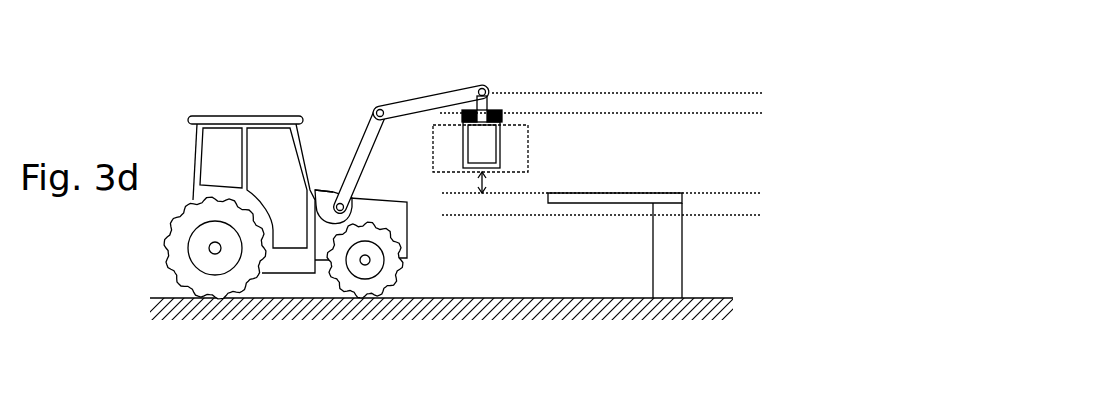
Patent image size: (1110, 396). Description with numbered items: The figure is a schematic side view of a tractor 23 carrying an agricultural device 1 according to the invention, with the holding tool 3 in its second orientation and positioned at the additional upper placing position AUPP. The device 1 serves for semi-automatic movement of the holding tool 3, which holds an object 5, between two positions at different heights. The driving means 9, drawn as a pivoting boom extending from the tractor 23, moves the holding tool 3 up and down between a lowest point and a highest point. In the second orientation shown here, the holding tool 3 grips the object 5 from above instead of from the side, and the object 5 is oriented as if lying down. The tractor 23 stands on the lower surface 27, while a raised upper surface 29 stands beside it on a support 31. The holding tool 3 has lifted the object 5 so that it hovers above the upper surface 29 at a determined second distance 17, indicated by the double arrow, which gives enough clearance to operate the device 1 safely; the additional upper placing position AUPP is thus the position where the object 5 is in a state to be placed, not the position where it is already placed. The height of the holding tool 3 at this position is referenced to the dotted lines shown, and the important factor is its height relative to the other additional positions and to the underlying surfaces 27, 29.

The tractor 23 is at (201, 96).
The agricultural device 1 is at (362, 96).
The driving means 9 is at (350, 178).
The holding tool 3 is at (460, 115).
The object 5 is at (460, 165).
The second distance 17 is at (475, 184).
The surface 27 is at (163, 297).
The surface 29 is at (664, 193).
The support post 31 is at (673, 260).
The additional upper placing position AUPP is at (752, 92).